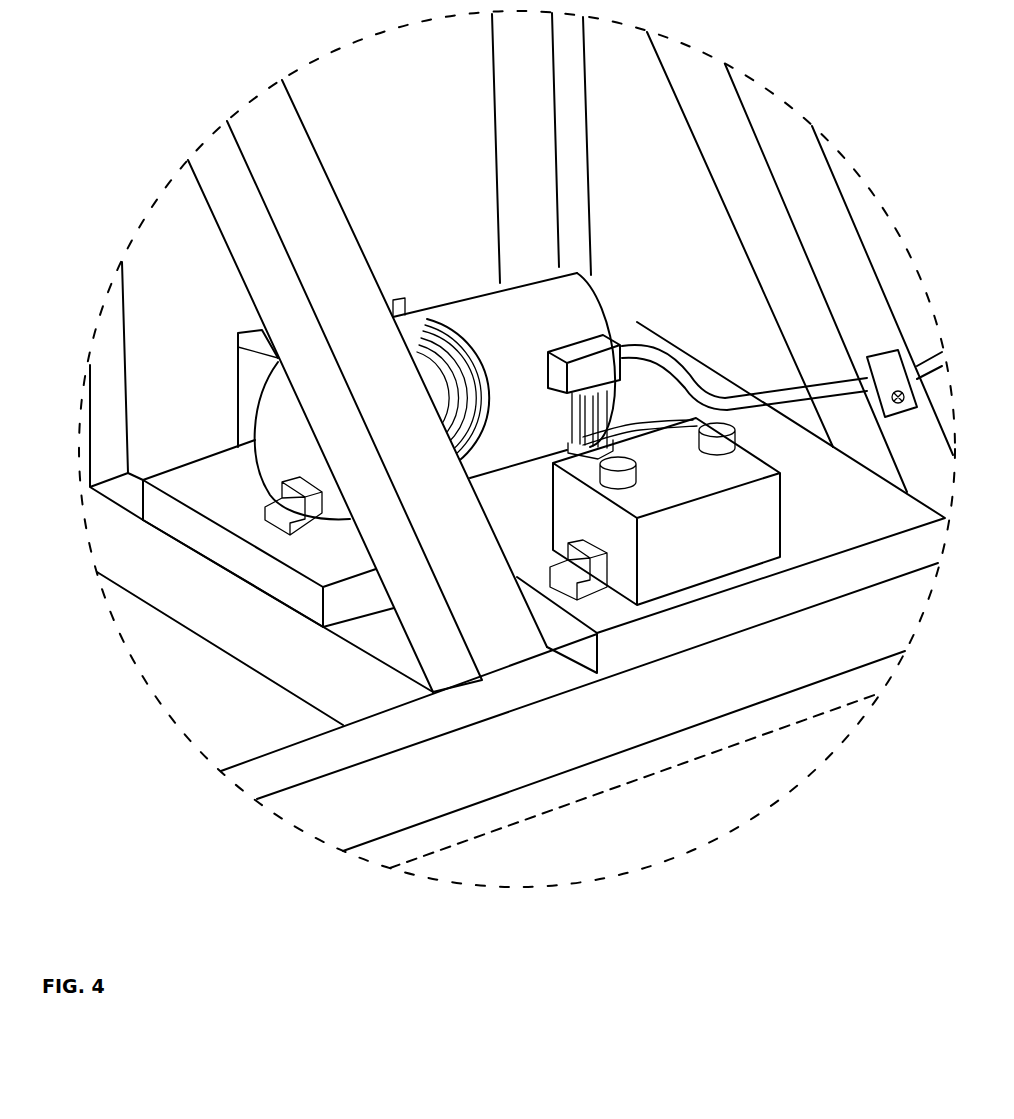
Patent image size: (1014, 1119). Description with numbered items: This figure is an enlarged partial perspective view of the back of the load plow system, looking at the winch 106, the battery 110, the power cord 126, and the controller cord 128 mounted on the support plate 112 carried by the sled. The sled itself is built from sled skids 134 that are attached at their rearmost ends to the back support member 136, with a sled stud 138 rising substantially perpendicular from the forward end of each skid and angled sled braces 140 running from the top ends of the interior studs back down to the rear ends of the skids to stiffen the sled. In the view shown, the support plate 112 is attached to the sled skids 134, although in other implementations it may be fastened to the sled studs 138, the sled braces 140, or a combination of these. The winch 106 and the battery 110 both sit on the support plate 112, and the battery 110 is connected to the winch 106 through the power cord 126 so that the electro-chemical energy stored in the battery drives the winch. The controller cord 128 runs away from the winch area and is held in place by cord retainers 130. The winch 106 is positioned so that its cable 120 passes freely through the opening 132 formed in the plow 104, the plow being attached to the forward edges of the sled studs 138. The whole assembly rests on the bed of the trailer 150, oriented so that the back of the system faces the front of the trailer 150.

The plow 104 is at (340, 78).
The winch 106 is at (480, 321).
The battery 110 is at (747, 520).
The support plate 112 is at (202, 533).
The cable 120 is at (253, 342).
The power cord 126 is at (575, 421).
The controller cord 128 is at (786, 398).
The cord retainers 130 is at (908, 406).
The opening 132 is at (256, 366).
The sled skids 134 is at (287, 657).
The back support member 136 is at (620, 718).
The sled studs 138 is at (522, 78).
The sled braces 140 is at (283, 174).
The trailer 150 is at (597, 778).